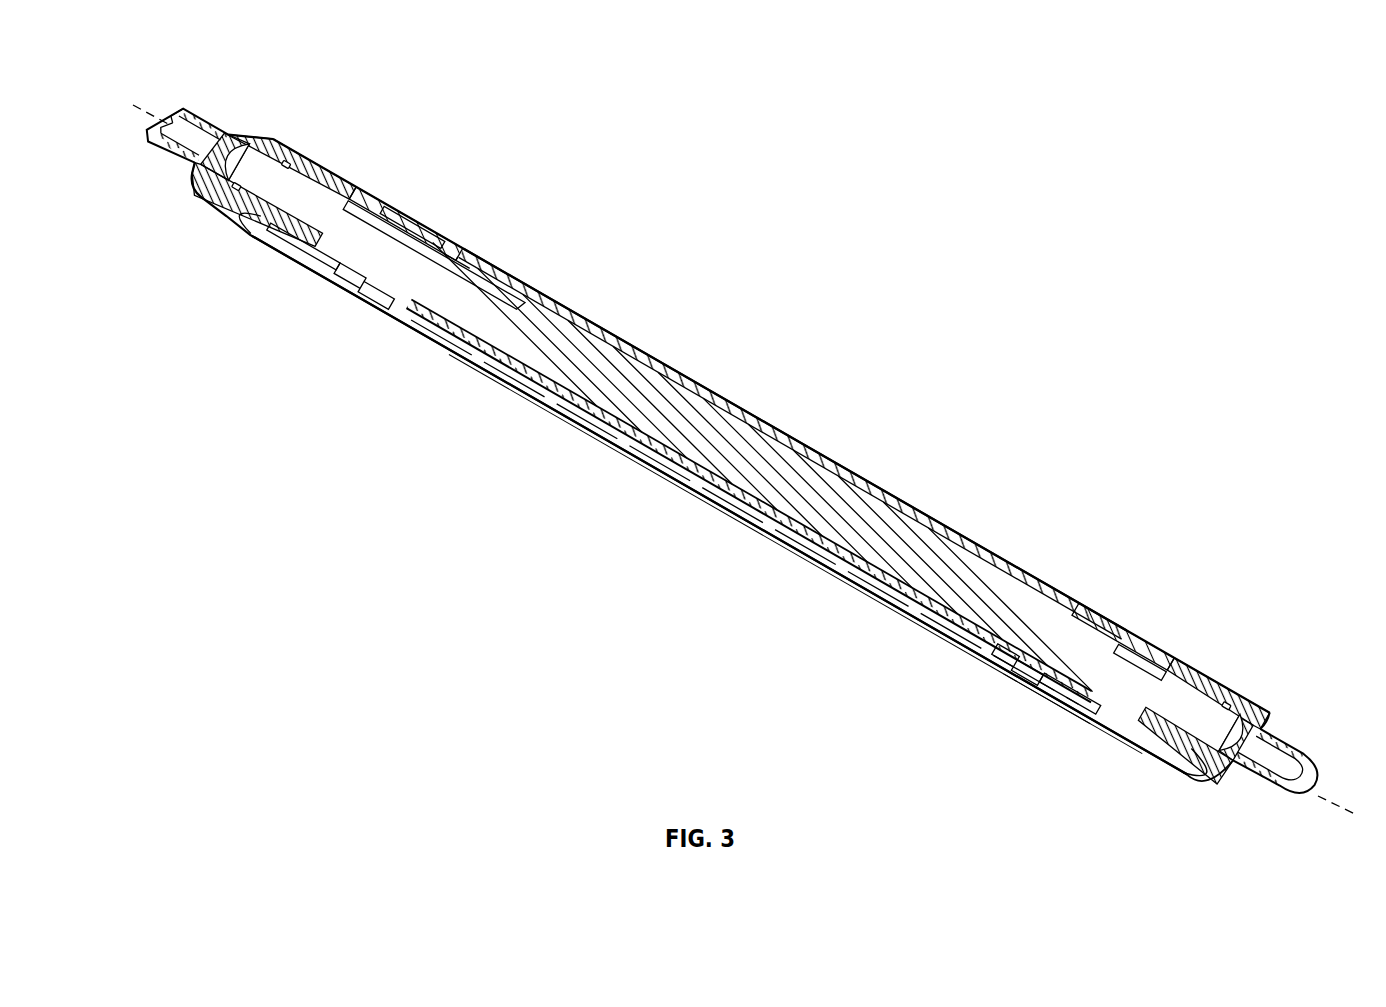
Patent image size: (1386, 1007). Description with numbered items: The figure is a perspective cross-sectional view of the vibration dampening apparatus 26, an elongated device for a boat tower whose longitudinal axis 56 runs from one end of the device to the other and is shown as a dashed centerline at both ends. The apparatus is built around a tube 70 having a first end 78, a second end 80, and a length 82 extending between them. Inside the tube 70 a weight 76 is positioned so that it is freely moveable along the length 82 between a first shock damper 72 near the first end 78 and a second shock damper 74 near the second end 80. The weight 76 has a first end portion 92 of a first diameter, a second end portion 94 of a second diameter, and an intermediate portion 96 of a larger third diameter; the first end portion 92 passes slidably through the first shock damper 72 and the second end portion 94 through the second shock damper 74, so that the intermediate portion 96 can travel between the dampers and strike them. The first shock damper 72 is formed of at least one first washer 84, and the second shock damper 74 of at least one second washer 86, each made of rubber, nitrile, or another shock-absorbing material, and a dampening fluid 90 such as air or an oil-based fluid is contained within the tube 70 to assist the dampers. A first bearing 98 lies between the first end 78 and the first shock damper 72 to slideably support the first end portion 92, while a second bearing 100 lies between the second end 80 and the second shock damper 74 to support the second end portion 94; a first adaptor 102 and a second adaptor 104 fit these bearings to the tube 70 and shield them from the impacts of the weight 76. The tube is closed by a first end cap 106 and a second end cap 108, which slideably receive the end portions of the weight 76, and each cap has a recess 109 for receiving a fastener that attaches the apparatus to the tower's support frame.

The vibration dampening apparatus 26 is at (1293, 86).
The longitudinal axis 56 is at (1320, 797).
The tube 70 is at (746, 524).
The first shock damper 72 is at (440, 243).
The second shock damper 74 is at (1088, 625).
The weight 76 is at (885, 492).
The first end 78 is at (402, 205).
The second end 80 is at (1063, 708).
The length 82 is at (625, 460).
The first washer 84 is at (367, 295).
The second washer 86 is at (1010, 667).
The dampening fluid 90 is at (455, 262).
The first end portion 92 is at (255, 232).
The second end portion 94 is at (1160, 740).
The intermediate portion 96 is at (720, 392).
The first bearing 98 is at (302, 248).
The second bearing 100 is at (1037, 677).
The first adaptor 102 is at (372, 198).
The second adaptor 104 is at (1140, 655).
The first end cap 106 is at (245, 135).
The second end cap 108 is at (1277, 723).
The recess 109 is at (173, 123).